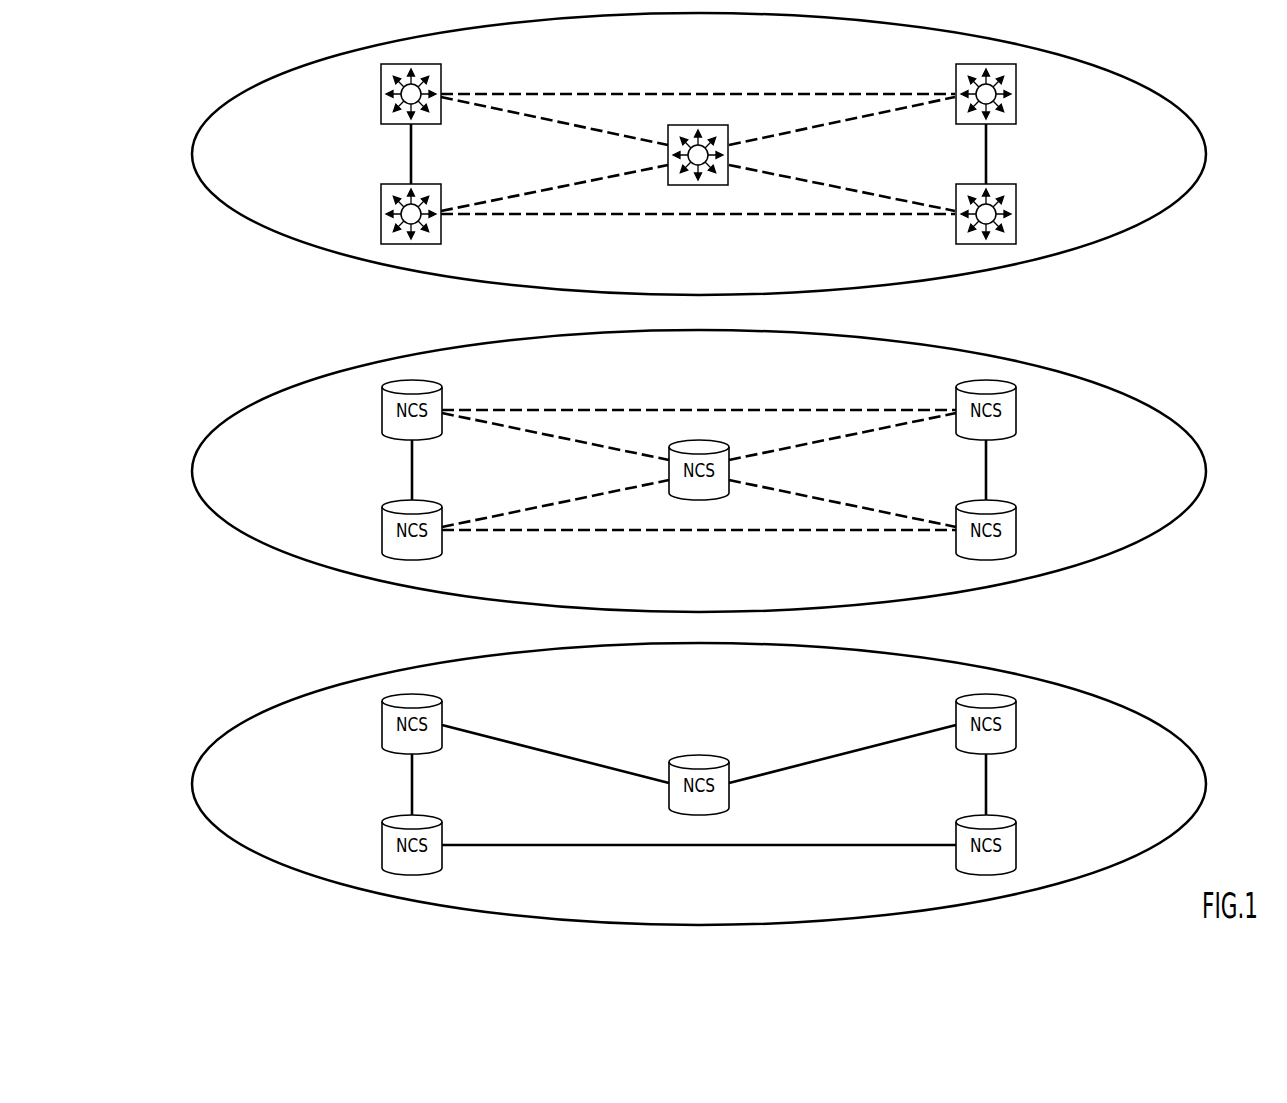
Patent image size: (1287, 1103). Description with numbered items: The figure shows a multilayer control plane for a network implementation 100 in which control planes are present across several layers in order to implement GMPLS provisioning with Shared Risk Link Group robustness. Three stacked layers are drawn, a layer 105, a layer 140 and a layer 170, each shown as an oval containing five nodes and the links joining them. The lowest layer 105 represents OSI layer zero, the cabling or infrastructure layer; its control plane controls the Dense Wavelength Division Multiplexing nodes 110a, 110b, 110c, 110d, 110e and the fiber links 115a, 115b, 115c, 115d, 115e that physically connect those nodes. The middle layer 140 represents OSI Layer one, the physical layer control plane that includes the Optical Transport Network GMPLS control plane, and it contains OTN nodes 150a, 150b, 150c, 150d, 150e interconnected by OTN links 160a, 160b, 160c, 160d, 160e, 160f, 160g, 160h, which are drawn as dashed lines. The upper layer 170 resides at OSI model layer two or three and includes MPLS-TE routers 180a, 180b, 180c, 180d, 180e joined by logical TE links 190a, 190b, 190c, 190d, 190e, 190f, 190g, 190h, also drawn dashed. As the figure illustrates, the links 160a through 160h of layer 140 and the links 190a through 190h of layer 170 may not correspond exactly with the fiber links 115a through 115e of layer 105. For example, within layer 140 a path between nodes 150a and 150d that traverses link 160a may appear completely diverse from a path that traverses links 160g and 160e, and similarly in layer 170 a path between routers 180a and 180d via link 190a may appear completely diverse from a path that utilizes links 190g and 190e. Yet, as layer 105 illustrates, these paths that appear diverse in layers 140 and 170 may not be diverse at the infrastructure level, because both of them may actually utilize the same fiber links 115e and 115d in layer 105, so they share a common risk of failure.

The network implementation 100 is at (108, 57).
The layer 105 is at (192, 784).
The Dense Wavelength Division Multiplexing node 110a is at (382, 737).
The Dense Wavelength Division Multiplexing node 110b is at (382, 852).
The Dense Wavelength Division Multiplexing node 110c is at (1017, 852).
The Dense Wavelength Division Multiplexing node 110d is at (1017, 737).
The Dense Wavelength Division Multiplexing node 110e is at (698, 755).
The fiber link 115a is at (410, 788).
The fiber link 115b is at (577, 843).
The fiber link 115c is at (987, 790).
The fiber link 115d is at (830, 757).
The fiber link 115e is at (540, 750).
The layer 140 is at (192, 470).
The Optical Transport Network node 150a is at (382, 422).
The Optical Transport Network node 150b is at (382, 542).
The Optical Transport Network node 150c is at (1017, 540).
The Optical Transport Network node 150d is at (1017, 422).
The Optical Transport Network node 150e is at (712, 441).
The Optical Transport Network link 160a is at (817, 409).
The Optical Transport Network link 160b is at (411, 477).
The Optical Transport Network link 160c is at (801, 531).
The Optical Transport Network link 160d is at (988, 470).
The Optical Transport Network link 160e is at (851, 434).
The Optical Transport Network link 160f is at (847, 503).
The Optical Transport Network link 160g is at (550, 437).
The Optical Transport Network link 160h is at (560, 502).
The layer 170 is at (192, 155).
The MPLS-TE router 180a is at (382, 110).
The MPLS-TE router 180b is at (382, 222).
The MPLS-TE router 180c is at (1016, 214).
The MPLS-TE router 180d is at (1016, 107).
The MPLS-TE router 180e is at (716, 126).
The logical TE link 190a is at (802, 93).
The logical TE link 190b is at (411, 155).
The logical TE link 190c is at (760, 215).
The logical TE link 190d is at (987, 157).
The logical TE link 190e is at (856, 119).
The logical TE link 190f is at (848, 190).
The logical TE link 190g is at (541, 119).
The logical TE link 190h is at (548, 189).